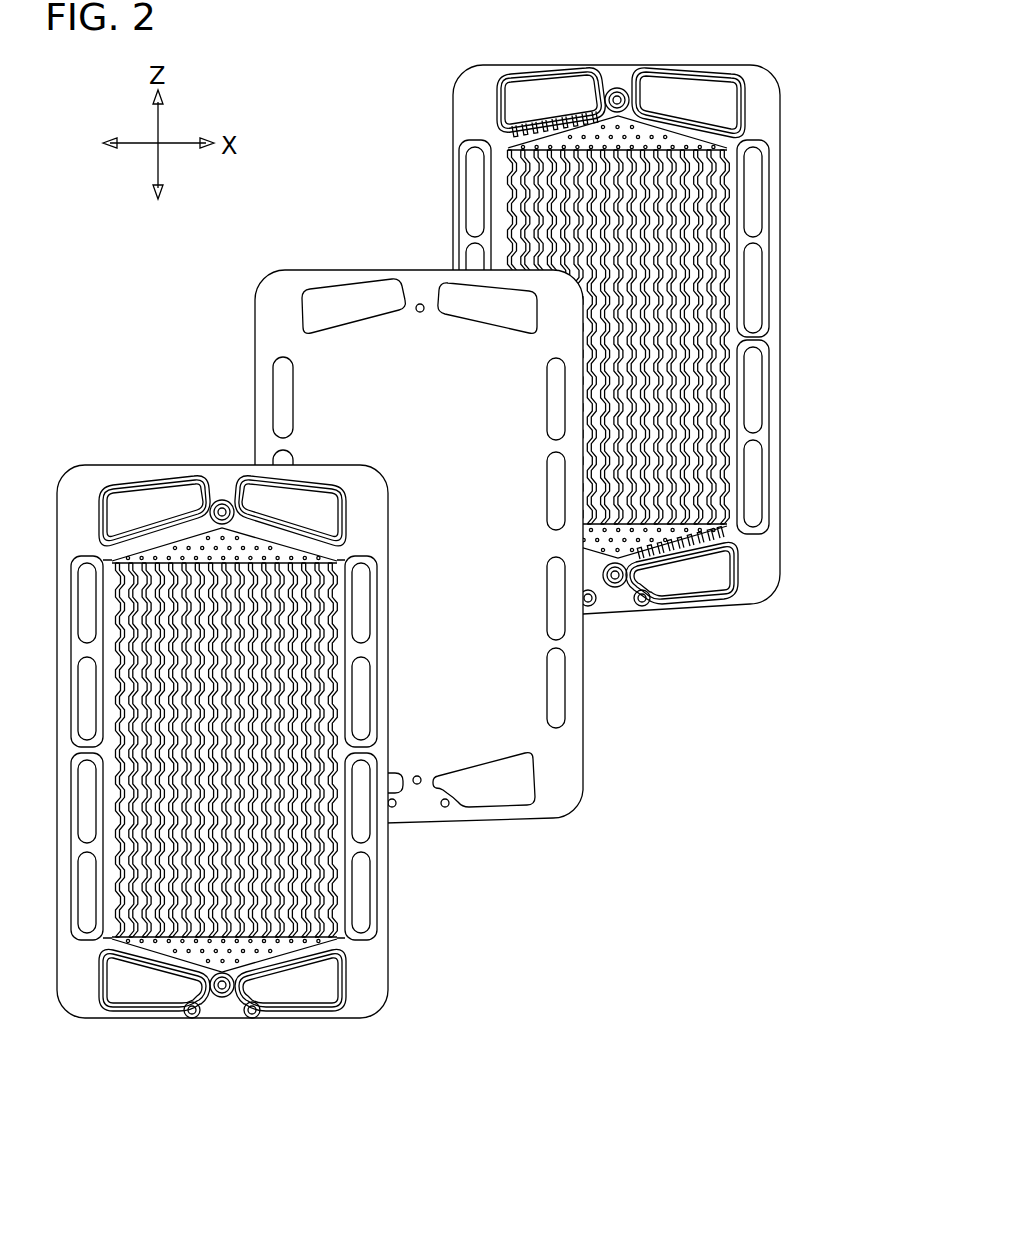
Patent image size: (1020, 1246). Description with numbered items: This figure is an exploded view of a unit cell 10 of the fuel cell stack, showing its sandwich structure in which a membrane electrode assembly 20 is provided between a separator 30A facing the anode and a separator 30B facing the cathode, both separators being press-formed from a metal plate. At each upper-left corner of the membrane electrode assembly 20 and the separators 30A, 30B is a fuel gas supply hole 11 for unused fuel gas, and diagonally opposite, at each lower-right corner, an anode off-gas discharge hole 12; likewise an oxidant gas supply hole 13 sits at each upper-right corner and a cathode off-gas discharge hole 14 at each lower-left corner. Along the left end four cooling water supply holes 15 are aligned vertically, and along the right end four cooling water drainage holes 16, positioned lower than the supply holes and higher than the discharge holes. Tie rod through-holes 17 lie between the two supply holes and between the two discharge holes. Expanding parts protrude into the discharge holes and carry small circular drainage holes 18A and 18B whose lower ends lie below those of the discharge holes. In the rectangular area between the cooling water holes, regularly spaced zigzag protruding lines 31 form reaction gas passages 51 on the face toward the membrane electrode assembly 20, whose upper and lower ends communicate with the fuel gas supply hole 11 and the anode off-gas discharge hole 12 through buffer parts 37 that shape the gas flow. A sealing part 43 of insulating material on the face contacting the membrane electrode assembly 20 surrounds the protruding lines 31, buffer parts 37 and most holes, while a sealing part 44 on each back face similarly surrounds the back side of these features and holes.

The unit cell 10 is at (372, 132).
The membrane electrode assembly 20 is at (272, 265).
The separator 30A is at (462, 74).
The separator 30B is at (68, 478).
The fuel gas supply hole 11 is at (548, 82).
The anode off-gas discharge hole 12 is at (712, 588).
The oxidant gas supply hole 13 is at (697, 84).
The cathode off-gas discharge hole 14 is at (598, 592).
The cooling water supply hole 15 is at (468, 250).
The cooling water drainage hole 16 is at (757, 270).
The tie rod through-hole 17 is at (612, 90).
The drainage hole 18A is at (645, 603).
The drainage hole 18B is at (590, 604).
The protruding line 31 is at (175, 897).
The buffer part 37 is at (632, 76).
The sealing part 43 is at (742, 560).
The sealing part 44 is at (350, 952).
The reaction gas passage 51 is at (730, 180).